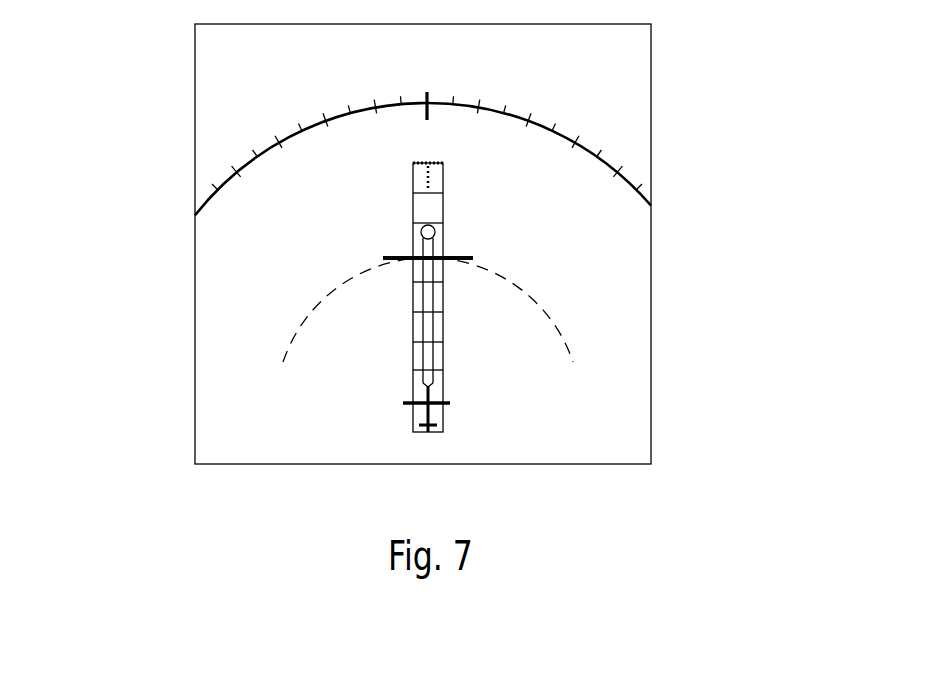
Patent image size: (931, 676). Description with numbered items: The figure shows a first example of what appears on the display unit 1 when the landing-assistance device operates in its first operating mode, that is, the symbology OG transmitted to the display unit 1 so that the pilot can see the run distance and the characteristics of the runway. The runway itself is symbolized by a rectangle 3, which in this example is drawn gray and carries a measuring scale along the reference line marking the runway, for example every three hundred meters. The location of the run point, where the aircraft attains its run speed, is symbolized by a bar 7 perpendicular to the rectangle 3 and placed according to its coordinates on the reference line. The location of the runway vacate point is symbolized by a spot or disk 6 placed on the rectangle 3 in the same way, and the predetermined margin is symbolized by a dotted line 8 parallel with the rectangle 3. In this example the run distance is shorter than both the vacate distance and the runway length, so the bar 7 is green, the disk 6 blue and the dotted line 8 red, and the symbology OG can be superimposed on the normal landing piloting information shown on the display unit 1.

The display unit 1 is at (140, 150).
The symbology of the first operating mode OG is at (453, 170).
The dotted line 8 is at (428, 183).
The disk 6 is at (434, 232).
The bar 7 is at (452, 262).
The rectangle 3 is at (445, 388).